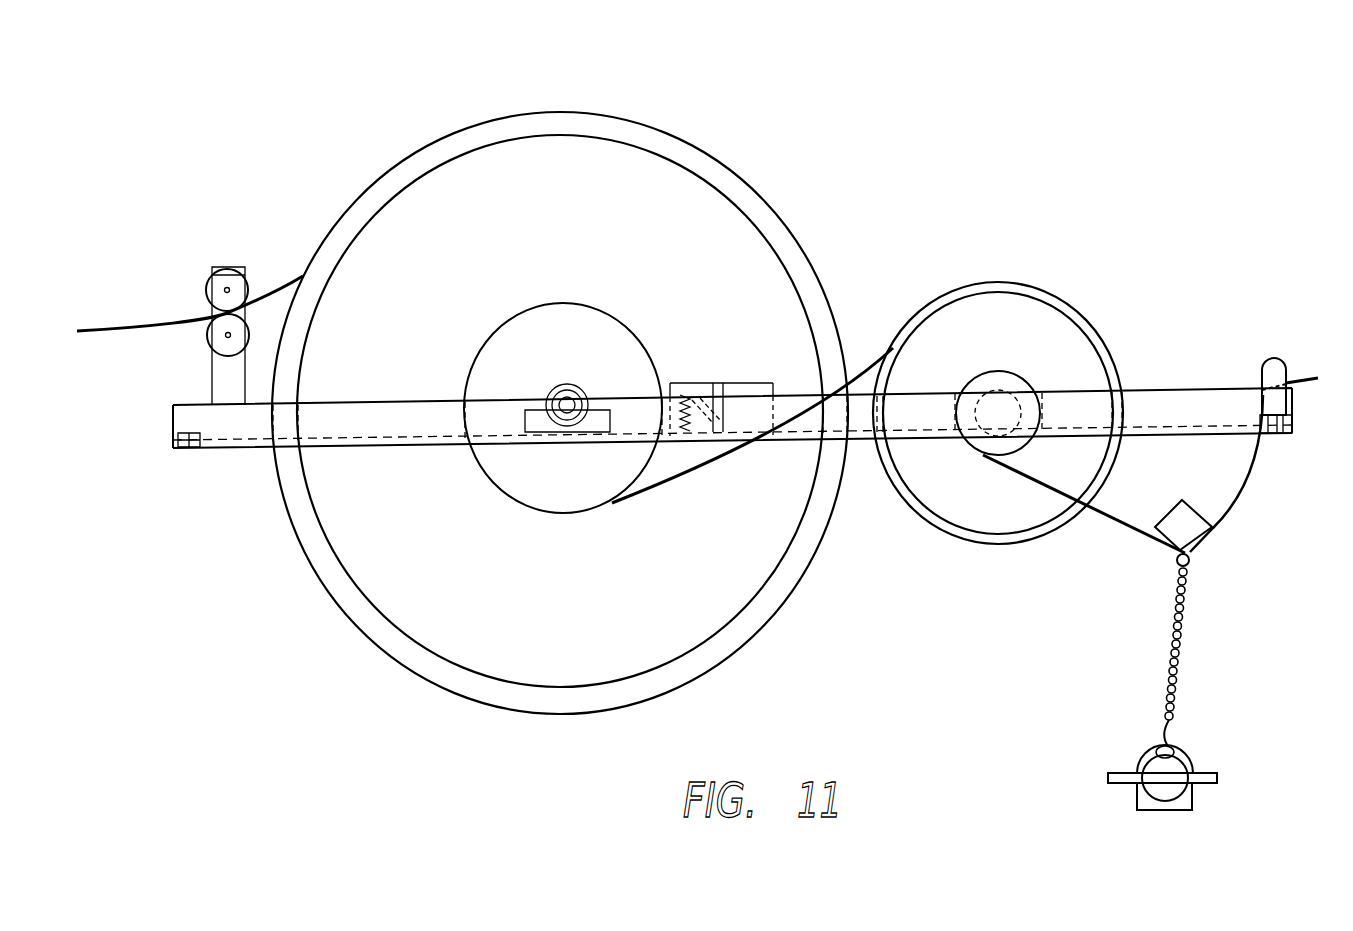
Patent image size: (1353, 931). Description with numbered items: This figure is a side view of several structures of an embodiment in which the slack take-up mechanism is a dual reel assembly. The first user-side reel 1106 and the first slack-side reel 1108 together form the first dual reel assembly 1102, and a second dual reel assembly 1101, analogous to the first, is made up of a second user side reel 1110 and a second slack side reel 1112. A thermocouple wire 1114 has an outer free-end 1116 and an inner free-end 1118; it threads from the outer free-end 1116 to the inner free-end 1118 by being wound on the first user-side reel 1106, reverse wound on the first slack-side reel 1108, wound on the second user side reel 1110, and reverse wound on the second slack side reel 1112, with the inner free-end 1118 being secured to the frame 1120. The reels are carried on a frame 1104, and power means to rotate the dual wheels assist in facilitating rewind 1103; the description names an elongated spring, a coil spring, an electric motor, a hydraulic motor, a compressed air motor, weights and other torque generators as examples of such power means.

The second dual reel assembly 1101 is at (999, 270).
The first dual reel assembly 1102 is at (552, 102).
The power means for rewind 1103 is at (1212, 656).
The frame 1104 is at (185, 452).
The first user-side reel 1106 is at (712, 172).
The first slack-side reel 1108 is at (606, 328).
The second user side reel 1110 is at (1073, 317).
The second slack side reel 1112 is at (997, 375).
The thermocouple wire 1114 is at (178, 313).
The outer free-end 1116 is at (78, 331).
The inner free-end 1118 is at (1293, 377).
The frame 1120 is at (1272, 357).